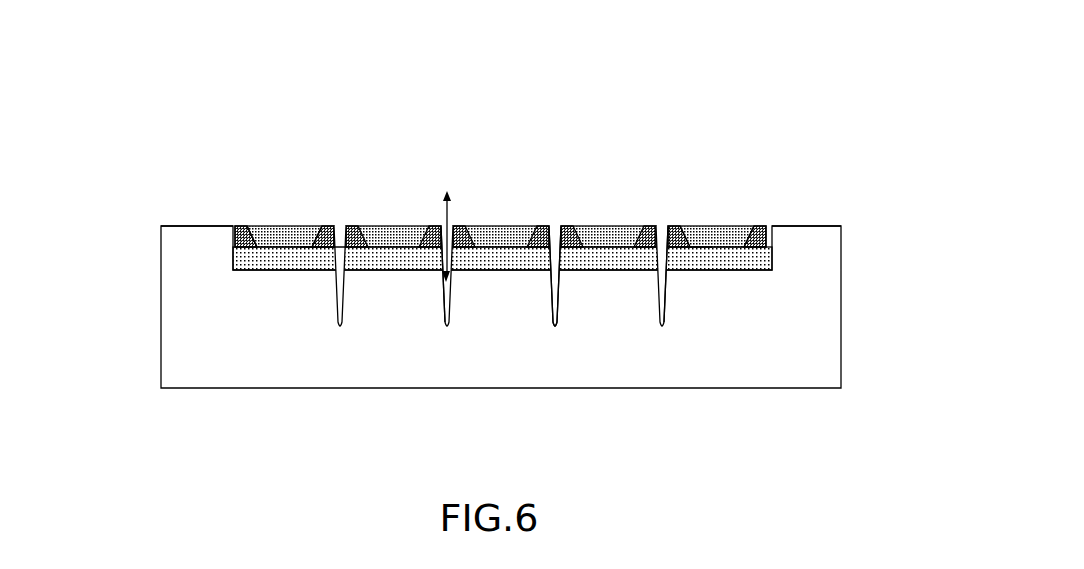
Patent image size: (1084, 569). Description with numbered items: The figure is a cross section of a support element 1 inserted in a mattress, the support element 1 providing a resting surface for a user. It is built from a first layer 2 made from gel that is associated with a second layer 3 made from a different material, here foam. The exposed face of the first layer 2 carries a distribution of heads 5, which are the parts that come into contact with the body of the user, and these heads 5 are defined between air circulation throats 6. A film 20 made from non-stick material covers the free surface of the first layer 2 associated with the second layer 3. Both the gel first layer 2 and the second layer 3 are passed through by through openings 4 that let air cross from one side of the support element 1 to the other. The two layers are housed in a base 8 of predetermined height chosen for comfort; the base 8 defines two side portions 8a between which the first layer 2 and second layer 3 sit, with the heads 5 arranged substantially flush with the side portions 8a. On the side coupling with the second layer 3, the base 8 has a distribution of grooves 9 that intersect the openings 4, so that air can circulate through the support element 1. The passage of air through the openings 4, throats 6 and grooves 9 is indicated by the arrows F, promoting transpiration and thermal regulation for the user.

The support element 1 is at (386, 126).
The first layer 2 is at (625, 228).
The second layer 3 is at (721, 265).
The through openings 4 is at (453, 223).
The heads 5 is at (284, 217).
The air circulation throats 6 is at (556, 228).
The base 8 is at (253, 372).
The side portions 8a is at (192, 233).
The grooves 9 is at (348, 308).
The film 20 is at (305, 241).
The arrows F is at (443, 216).